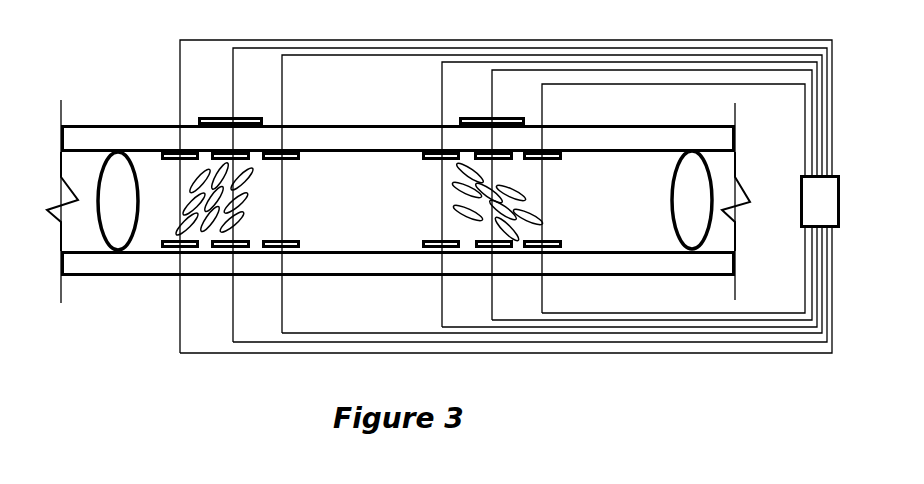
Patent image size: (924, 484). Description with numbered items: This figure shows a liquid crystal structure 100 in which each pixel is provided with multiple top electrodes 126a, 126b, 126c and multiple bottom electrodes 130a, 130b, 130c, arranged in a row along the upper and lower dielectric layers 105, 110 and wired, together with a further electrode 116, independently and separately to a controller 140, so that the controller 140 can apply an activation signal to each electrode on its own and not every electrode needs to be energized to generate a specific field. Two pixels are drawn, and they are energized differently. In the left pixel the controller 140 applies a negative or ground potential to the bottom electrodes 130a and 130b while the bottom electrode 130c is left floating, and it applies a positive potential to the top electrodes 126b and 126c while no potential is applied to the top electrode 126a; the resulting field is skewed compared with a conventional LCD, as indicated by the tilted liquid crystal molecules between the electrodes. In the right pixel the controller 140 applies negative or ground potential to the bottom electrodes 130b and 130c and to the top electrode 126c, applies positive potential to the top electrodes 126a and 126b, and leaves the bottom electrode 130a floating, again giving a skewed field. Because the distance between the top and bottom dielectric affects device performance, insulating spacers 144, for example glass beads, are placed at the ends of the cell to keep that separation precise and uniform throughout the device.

The display device 100 is at (398, 201).
The first substrate 105 is at (735, 125).
The second substrate 110 is at (728, 250).
The common electrode 116 is at (250, 117).
The top electrode 126a is at (167, 152).
The top electrode 126b is at (230, 151).
The top electrode 126c is at (282, 152).
The bottom electrode 130a is at (161, 253).
The bottom electrode 130b is at (220, 253).
The bottom electrode 130c is at (277, 253).
The controller 140 is at (840, 175).
The spacers 144 is at (700, 182).